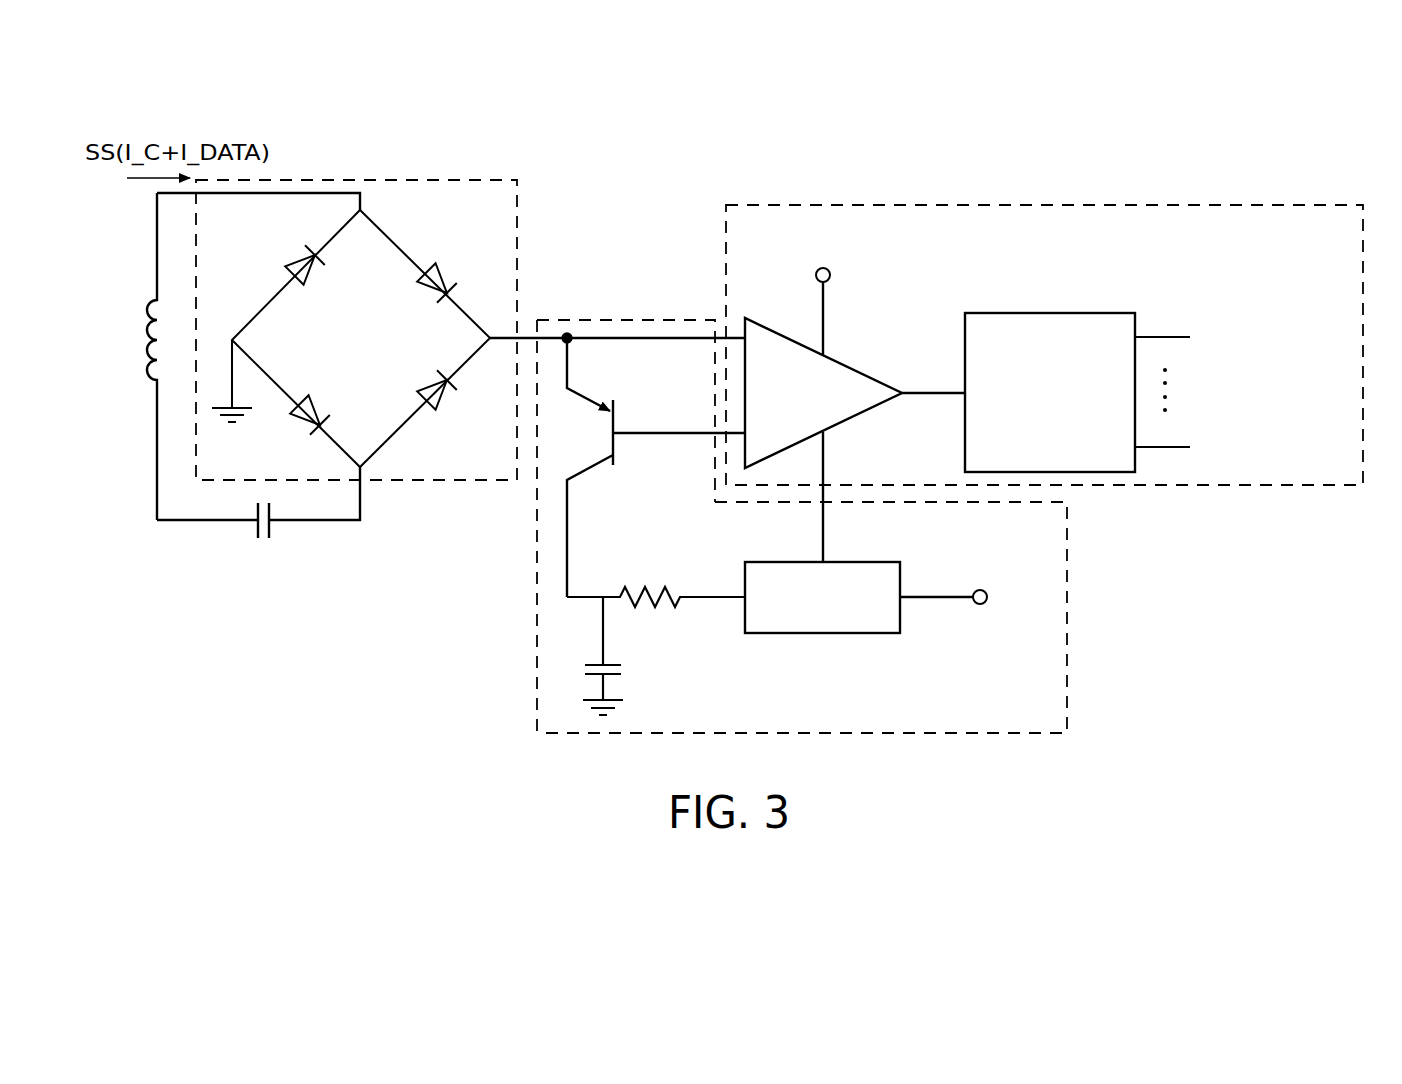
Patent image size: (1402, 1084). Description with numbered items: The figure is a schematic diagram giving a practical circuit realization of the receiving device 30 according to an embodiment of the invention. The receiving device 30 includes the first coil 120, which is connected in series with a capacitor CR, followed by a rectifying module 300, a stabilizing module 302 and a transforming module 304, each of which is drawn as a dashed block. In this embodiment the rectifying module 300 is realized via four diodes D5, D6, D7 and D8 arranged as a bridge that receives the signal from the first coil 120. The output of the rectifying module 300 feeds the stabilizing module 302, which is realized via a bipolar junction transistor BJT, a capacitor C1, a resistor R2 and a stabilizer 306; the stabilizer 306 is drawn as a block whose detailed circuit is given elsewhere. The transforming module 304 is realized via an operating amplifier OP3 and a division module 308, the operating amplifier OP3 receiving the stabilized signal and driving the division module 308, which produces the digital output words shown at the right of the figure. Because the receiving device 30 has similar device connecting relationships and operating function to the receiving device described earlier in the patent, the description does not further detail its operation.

The receiving device 30 is at (1100, 98).
The first coil 120 is at (141, 323).
The rectifying module 300 is at (373, 311).
The stabilizing module 302 is at (641, 508).
The transforming module 304 is at (1044, 326).
The stabilizer 306 is at (870, 562).
The division module 308 is at (1100, 313).
The diode D5 is at (291, 261).
The diode D6 is at (443, 271).
The diode D7 is at (298, 425).
The diode D8 is at (443, 406).
The capacitor CR is at (258, 519).
The bipolar junction transistor BJT is at (616, 386).
The resistor R2 is at (656, 582).
The capacitor C1 is at (589, 656).
The operating amplifier OP3 is at (823, 403).